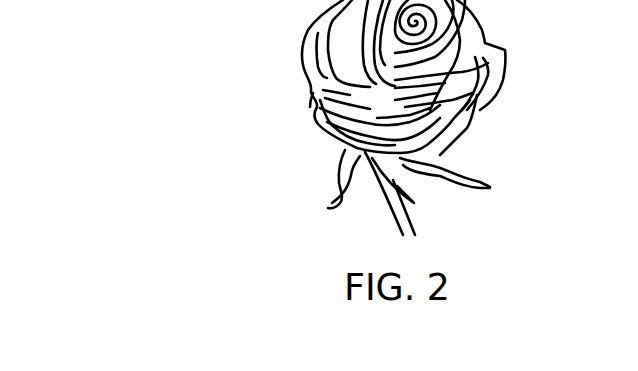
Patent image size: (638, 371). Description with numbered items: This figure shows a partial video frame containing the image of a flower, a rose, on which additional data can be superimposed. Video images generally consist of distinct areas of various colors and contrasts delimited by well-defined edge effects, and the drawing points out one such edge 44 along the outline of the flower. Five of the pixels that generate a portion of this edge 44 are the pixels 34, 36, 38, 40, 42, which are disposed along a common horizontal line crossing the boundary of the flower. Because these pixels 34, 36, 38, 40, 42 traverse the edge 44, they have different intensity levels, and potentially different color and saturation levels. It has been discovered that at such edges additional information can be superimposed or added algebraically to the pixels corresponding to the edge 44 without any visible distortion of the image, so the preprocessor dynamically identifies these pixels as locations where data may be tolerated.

The pixel 34 is at (269, 117).
The pixel 36 is at (291, 117).
The pixel 38 is at (312, 117).
The pixel 40 is at (319, 117).
The pixel 42 is at (347, 58).
The edge 44 is at (316, 120).